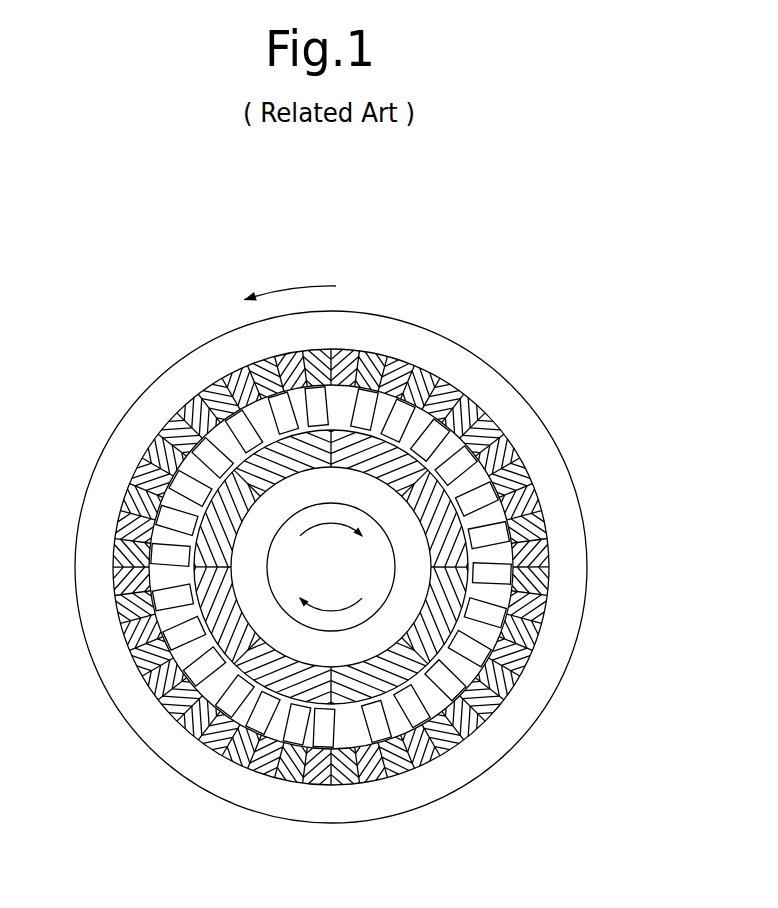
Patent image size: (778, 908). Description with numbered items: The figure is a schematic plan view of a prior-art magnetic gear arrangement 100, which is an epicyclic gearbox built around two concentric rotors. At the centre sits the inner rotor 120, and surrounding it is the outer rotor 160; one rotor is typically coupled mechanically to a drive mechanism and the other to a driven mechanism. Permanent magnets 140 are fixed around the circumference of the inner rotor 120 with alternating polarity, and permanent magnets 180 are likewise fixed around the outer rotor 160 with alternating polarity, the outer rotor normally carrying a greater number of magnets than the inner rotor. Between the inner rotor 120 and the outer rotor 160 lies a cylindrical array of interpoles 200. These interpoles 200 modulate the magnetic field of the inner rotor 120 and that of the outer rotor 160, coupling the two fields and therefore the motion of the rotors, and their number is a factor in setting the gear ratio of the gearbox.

The magnetic gear arrangement 100 is at (490, 302).
The inner rotor 120 is at (260, 598).
The permanent magnets 140 is at (357, 685).
The outer rotor 160 is at (165, 755).
The permanent magnets 180 is at (458, 738).
The interpoles 200 is at (488, 617).